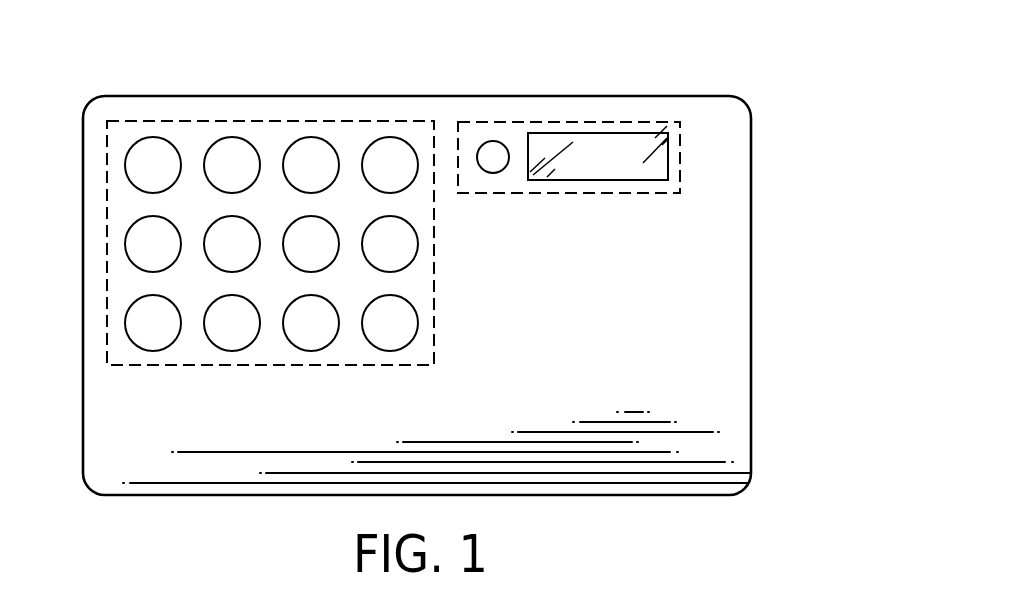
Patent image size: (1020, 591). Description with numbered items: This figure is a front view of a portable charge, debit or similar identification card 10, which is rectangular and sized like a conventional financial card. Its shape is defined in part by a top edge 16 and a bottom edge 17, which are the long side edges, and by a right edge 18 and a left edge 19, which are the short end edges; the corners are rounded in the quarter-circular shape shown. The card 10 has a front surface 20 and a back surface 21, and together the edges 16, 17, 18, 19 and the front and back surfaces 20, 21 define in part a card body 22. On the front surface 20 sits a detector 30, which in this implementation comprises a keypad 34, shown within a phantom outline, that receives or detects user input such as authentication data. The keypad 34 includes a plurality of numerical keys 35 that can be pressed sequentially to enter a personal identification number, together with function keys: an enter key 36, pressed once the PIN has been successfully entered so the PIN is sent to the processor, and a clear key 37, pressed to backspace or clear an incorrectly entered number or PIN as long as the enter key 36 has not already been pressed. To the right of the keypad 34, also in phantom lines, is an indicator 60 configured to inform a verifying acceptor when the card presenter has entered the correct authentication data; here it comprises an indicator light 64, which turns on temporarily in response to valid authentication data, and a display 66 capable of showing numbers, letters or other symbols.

The card 10 is at (640, 42).
The top edge 16 is at (473, 96).
The bottom edge 17 is at (282, 497).
The right edge 18 is at (753, 415).
The left edge 19 is at (82, 429).
The front surface 20 is at (715, 222).
The back surface 21 is at (752, 137).
The card body 22 is at (708, 350).
The detector 30 is at (268, 121).
The keypad 34 is at (128, 205).
The numerical keys 35 is at (133, 318).
The enter key 36 is at (398, 263).
The clear key 37 is at (398, 337).
The indicator 60 is at (555, 121).
The indicator light 64 is at (493, 158).
The display 66 is at (618, 160).